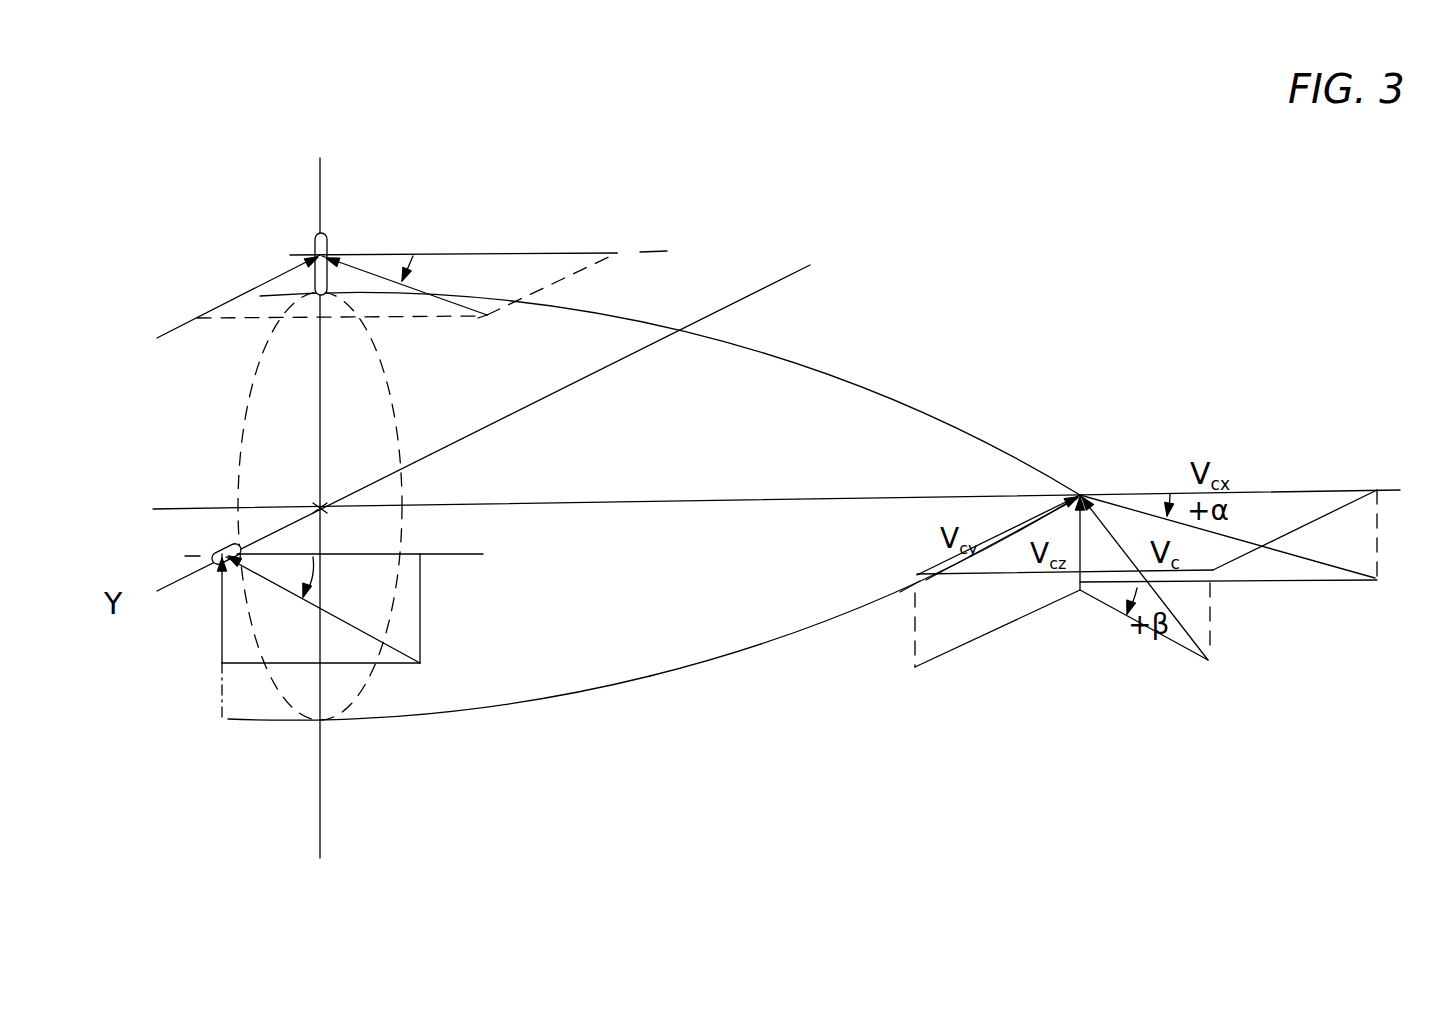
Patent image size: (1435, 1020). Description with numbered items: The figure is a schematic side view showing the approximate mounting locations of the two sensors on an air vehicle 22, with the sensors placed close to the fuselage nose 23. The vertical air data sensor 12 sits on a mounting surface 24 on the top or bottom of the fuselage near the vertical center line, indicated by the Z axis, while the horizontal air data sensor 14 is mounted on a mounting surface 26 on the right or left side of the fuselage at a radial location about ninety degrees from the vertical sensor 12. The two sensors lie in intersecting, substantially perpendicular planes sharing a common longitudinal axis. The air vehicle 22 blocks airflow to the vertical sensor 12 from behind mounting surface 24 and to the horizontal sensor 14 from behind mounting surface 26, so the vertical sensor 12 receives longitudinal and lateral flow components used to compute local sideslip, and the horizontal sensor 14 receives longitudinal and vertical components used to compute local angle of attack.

The vertical air data sensor 12 is at (332, 215).
The horizontal air data sensor 14 is at (180, 623).
The air vehicle 22 is at (450, 712).
The fuselage nose 23 is at (800, 632).
The mounting surface 24 is at (417, 292).
The mounting surface 26 is at (222, 630).